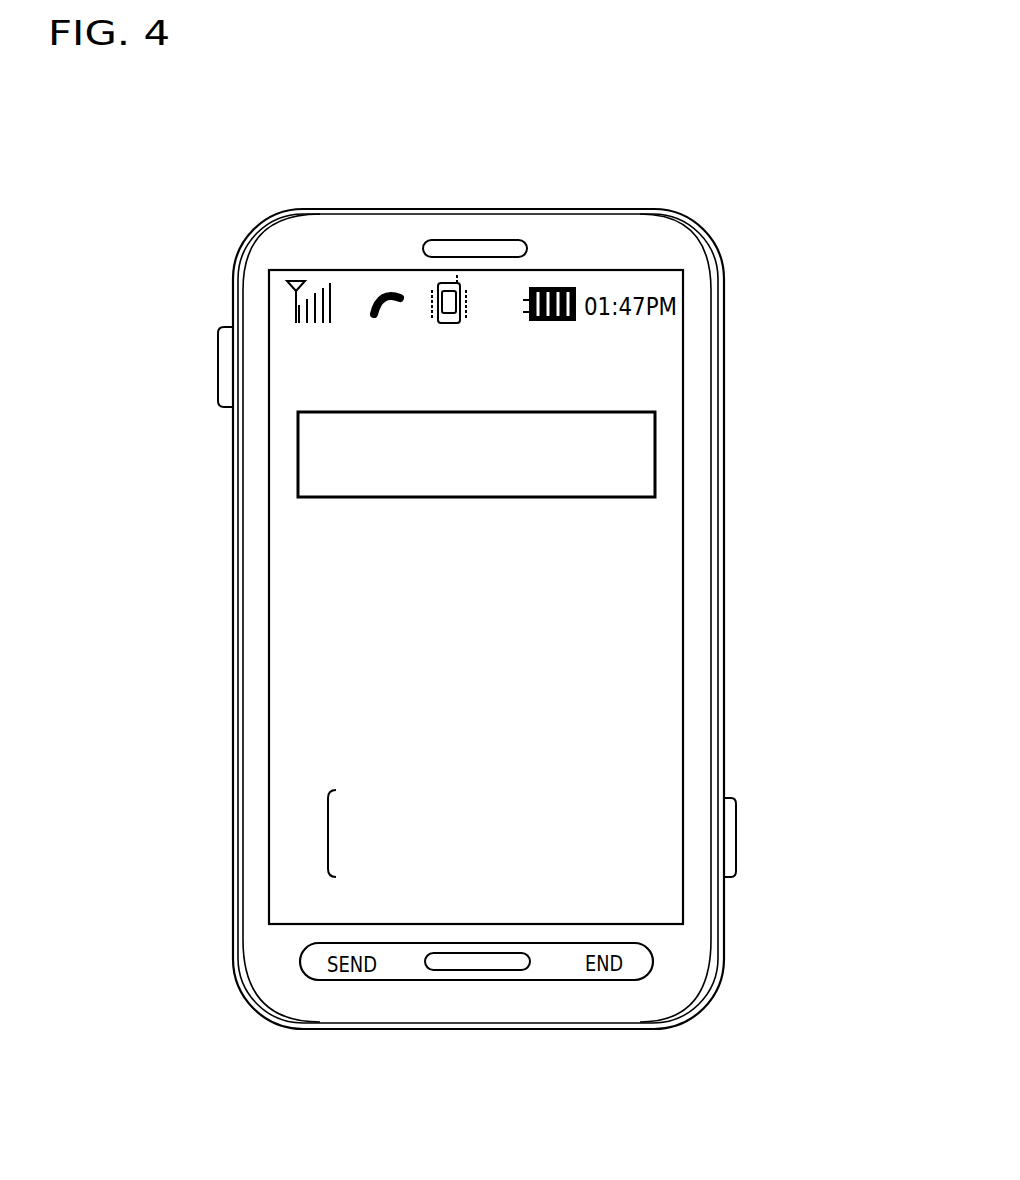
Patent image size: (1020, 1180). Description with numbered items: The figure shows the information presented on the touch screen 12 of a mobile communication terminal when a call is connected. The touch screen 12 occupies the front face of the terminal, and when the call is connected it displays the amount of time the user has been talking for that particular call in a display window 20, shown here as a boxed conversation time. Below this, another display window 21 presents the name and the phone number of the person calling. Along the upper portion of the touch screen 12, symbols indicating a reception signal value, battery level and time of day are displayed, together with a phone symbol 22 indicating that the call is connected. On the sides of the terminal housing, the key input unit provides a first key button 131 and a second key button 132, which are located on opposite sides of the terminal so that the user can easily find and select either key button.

The touch screen 12 is at (683, 340).
The display window 20 is at (655, 450).
The display window 21 is at (327, 833).
The phone symbol 22 is at (377, 288).
The first key button 131 is at (736, 835).
The second key button 132 is at (218, 364).